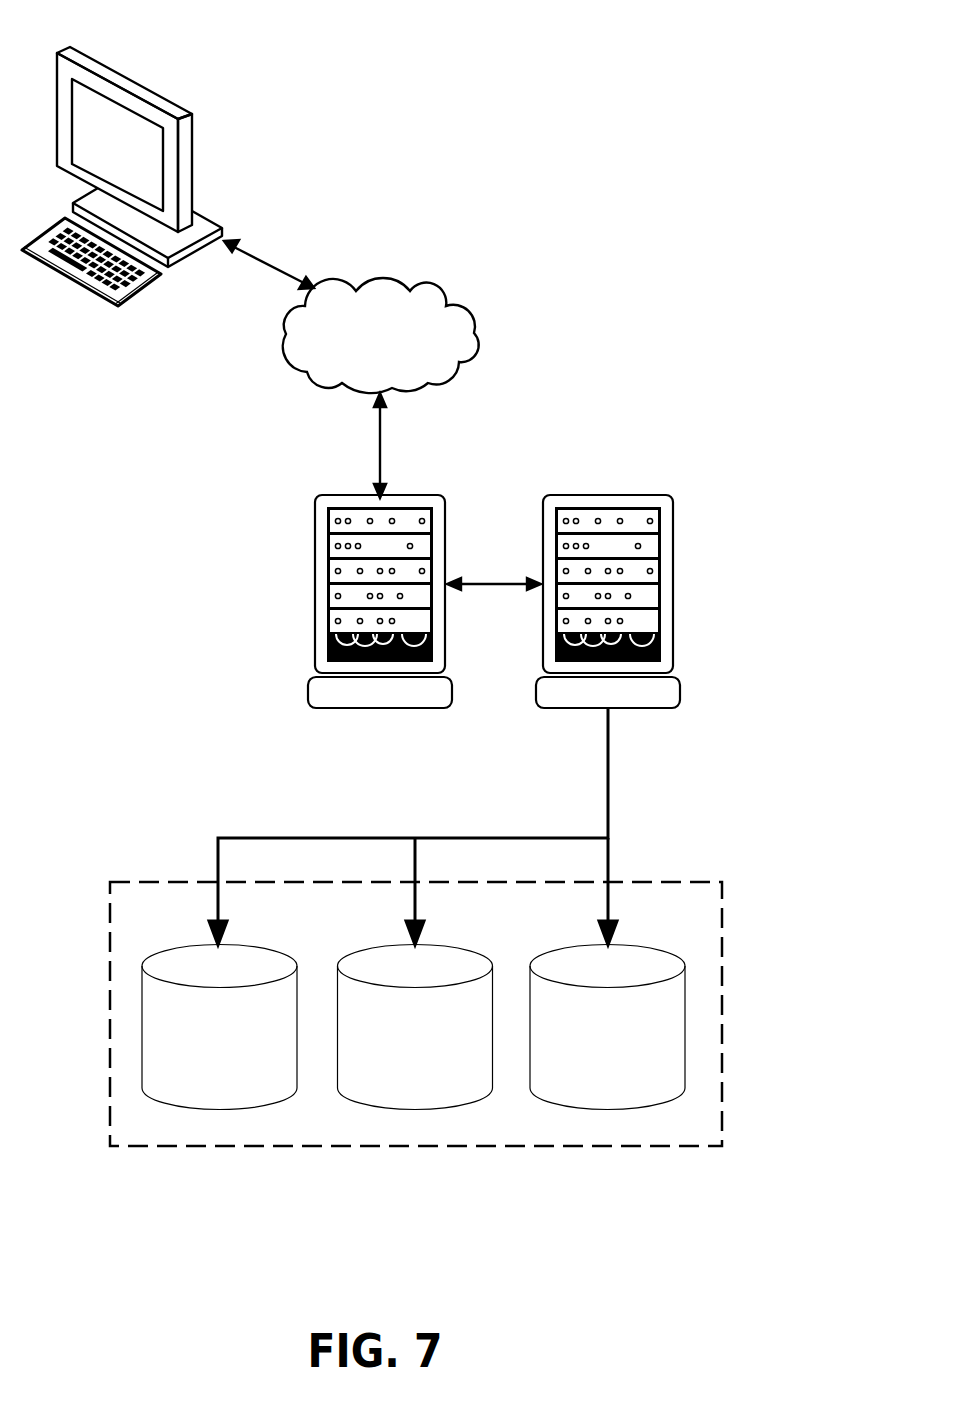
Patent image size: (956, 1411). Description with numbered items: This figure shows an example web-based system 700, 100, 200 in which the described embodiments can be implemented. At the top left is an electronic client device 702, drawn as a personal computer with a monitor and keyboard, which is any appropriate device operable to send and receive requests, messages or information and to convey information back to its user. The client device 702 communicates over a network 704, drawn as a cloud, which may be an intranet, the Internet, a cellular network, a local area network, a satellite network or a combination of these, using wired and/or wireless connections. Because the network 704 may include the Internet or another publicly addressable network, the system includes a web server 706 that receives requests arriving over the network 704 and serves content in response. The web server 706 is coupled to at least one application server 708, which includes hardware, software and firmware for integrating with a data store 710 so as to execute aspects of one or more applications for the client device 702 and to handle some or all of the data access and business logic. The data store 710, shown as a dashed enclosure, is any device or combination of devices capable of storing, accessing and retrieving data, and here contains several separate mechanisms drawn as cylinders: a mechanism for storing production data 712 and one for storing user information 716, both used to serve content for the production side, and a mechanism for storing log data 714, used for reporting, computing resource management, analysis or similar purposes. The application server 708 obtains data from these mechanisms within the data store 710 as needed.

The system 700 is at (372, 618).
The system 100 is at (372, 618).
The system 200 is at (372, 618).
The electronic client device 702 is at (141, 85).
The network 704 is at (417, 289).
The web server 706 is at (315, 585).
The application server 708 is at (537, 684).
The data store 710 is at (147, 1147).
The production data 712 is at (218, 1110).
The log data 714 is at (415, 1108).
The user information 716 is at (608, 1108).